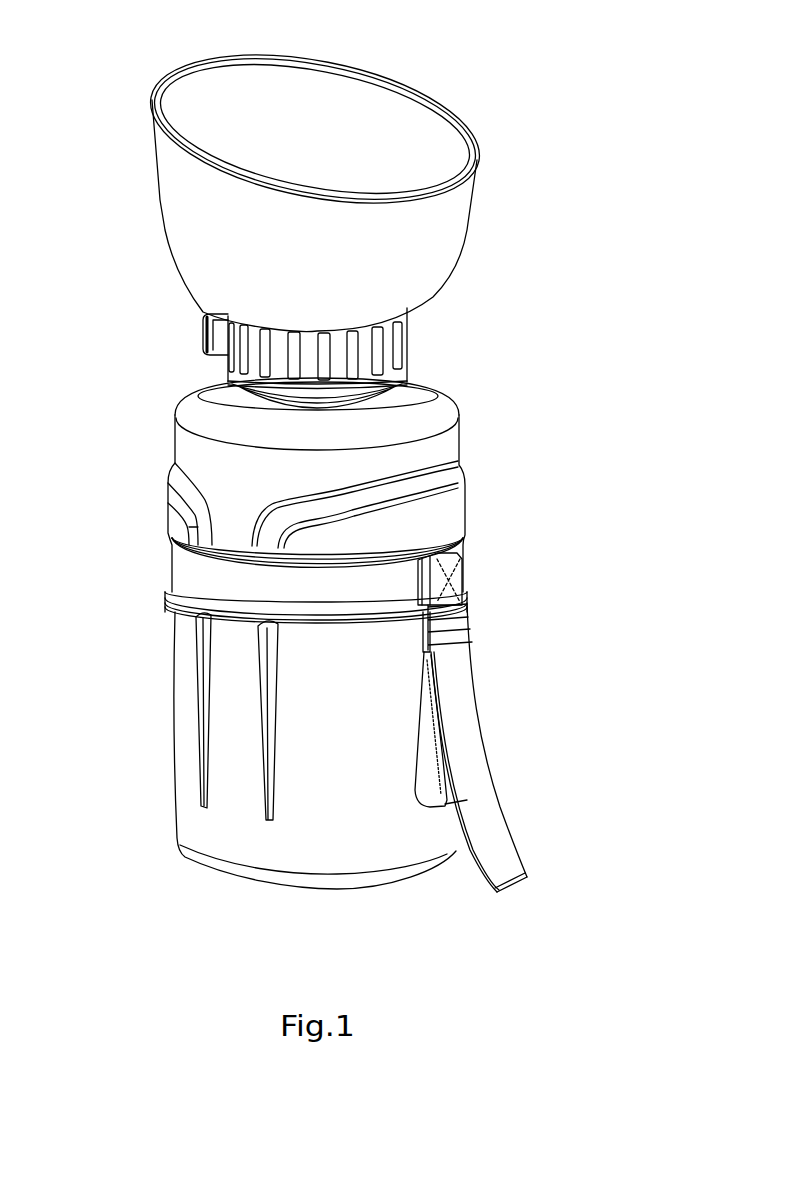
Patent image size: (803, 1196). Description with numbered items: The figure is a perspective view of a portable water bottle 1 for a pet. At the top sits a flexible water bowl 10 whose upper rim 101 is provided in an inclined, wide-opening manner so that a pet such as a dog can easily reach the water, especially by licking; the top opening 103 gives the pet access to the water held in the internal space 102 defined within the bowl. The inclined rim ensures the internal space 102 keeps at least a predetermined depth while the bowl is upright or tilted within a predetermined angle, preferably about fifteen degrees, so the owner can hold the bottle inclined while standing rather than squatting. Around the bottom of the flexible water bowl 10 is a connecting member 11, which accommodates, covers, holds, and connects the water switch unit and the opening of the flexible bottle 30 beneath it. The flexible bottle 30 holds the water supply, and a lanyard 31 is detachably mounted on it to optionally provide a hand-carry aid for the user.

The portable water bottle 1 is at (535, 367).
The flexible water bowl 10 is at (185, 206).
The upper rim 101 is at (213, 78).
The internal space 102 is at (345, 160).
The top opening 103 is at (337, 88).
The connecting member 11 is at (253, 353).
The flexible bottle 30 is at (453, 445).
The lanyard 31 is at (455, 580).